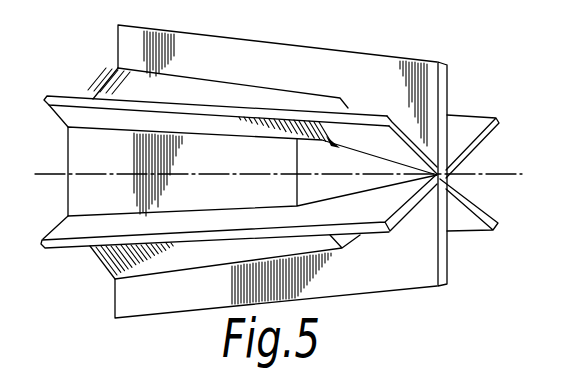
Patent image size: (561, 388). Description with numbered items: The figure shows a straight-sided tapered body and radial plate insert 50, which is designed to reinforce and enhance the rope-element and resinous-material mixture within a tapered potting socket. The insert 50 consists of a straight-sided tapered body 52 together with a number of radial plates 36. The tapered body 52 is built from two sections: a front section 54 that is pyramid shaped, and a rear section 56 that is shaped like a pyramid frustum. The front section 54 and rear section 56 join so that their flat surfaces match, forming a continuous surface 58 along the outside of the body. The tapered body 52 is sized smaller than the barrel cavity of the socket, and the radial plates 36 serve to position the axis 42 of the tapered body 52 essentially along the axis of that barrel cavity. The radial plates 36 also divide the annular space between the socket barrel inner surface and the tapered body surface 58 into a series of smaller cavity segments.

The radial plates 36 is at (483, 83).
The axis of tapered body 42 is at (82, 170).
The straight-sided tapered body and radial plate insert 50 is at (455, 241).
The straight-sided tapered body 52 is at (105, 78).
The front section 54 is at (330, 110).
The rear section 56 is at (302, 92).
The continuous surface 58 is at (245, 92).